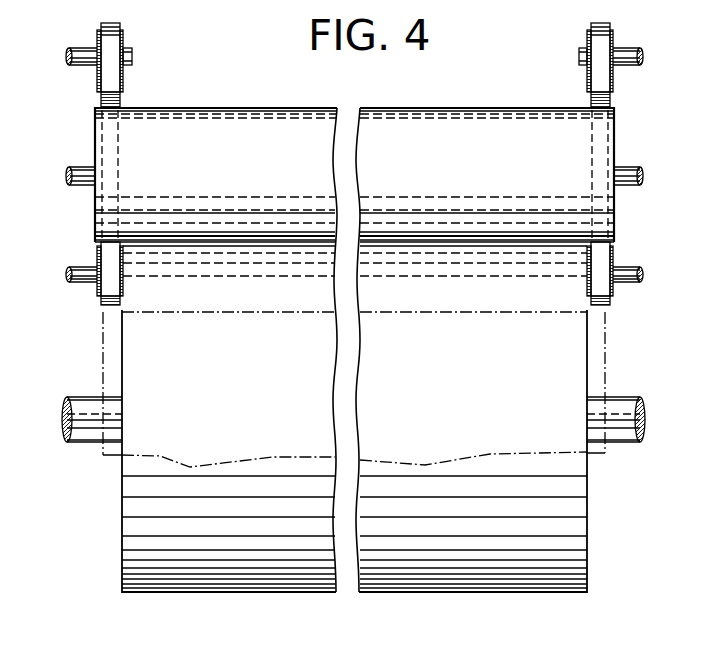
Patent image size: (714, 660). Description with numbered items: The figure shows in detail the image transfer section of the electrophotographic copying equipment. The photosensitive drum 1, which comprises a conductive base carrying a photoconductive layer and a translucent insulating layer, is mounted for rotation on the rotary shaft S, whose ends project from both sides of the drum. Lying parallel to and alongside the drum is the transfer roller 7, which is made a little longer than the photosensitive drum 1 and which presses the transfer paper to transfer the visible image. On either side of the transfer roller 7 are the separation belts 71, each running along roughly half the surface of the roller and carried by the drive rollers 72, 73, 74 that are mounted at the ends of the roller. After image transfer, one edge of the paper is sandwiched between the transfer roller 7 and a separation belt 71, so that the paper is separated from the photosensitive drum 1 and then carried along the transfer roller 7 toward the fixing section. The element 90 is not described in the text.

The photosensitive drum 1 is at (296, 565).
The transfer roller 7 is at (283, 122).
The separation belt 71 is at (110, 100).
The drive roller 72 is at (97, 255).
The drive roller 73 is at (80, 170).
The drive roller 74 is at (123, 34).
The lower frame member 90 is at (379, 472).
The rotary shaft S is at (88, 412).